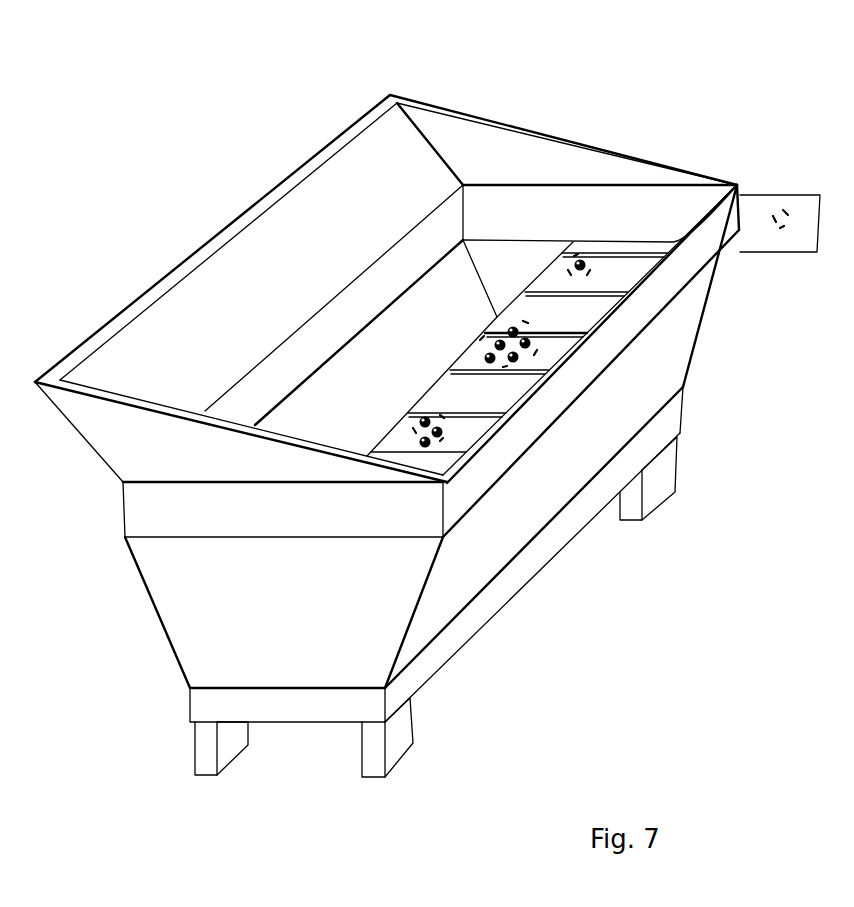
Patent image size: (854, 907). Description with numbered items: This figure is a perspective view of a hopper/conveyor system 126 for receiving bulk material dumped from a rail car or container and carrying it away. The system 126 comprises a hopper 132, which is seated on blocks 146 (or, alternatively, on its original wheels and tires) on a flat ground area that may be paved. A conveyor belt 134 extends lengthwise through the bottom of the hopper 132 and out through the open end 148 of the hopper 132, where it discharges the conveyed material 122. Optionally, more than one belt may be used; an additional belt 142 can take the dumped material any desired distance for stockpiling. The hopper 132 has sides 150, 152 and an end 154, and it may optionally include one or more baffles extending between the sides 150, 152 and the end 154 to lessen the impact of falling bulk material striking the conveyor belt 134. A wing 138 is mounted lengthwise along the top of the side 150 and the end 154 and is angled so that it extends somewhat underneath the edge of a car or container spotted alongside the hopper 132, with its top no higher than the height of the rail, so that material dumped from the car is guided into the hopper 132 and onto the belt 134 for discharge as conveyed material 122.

The conveyed material 122 is at (545, 336).
The hopper/conveyor system 126 is at (188, 162).
The hopper 132 is at (523, 503).
The conveyor belt 134 is at (620, 267).
The wing 138 is at (180, 312).
The belt 142 is at (752, 200).
The blocks 146 is at (360, 762).
The open end 148 is at (500, 278).
The side 150 is at (400, 365).
The side 152 is at (648, 375).
The end 154 is at (223, 627).